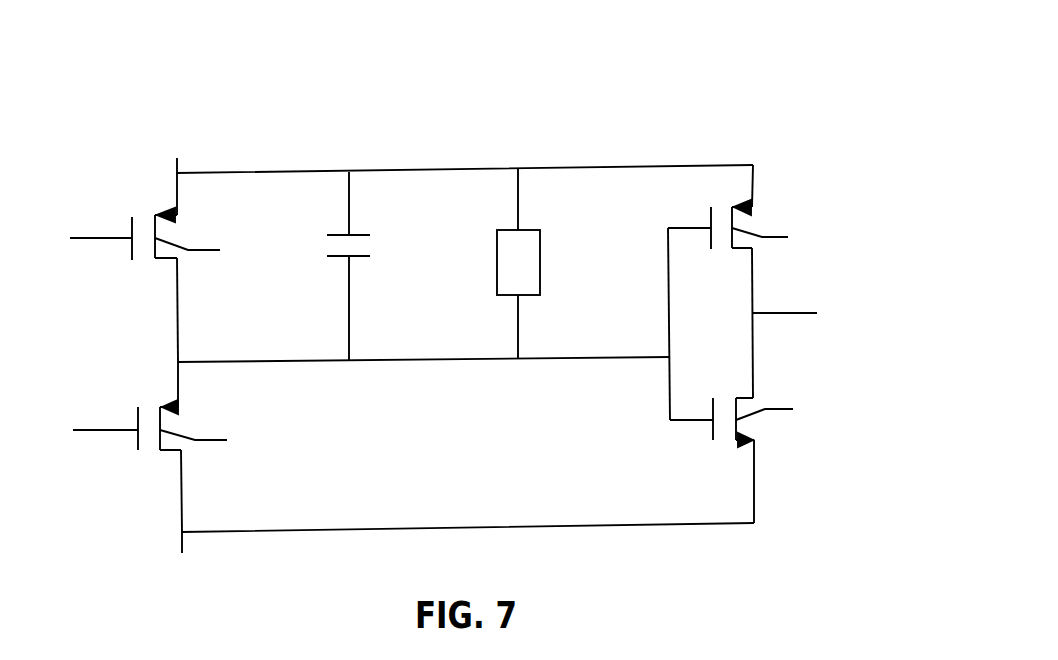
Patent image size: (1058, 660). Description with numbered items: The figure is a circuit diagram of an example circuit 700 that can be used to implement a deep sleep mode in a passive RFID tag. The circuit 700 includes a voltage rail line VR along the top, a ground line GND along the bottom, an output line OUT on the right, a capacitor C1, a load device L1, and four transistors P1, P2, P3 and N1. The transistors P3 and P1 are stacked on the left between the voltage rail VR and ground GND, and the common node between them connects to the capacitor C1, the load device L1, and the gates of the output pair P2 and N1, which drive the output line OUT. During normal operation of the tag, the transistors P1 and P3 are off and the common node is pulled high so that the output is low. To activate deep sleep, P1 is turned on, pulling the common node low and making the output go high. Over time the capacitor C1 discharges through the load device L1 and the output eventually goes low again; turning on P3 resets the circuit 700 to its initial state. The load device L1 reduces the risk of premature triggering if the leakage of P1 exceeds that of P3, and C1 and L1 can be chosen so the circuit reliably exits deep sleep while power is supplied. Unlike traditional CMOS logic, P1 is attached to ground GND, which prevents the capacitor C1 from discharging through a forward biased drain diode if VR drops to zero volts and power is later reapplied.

The circuit 700 is at (795, 88).
The transistor P1 is at (173, 429).
The transistor P2 is at (754, 228).
The transistor P3 is at (171, 239).
The transistor N1 is at (757, 420).
The capacitor C1 is at (358, 232).
The load device L1 is at (530, 230).
The voltage rail line VR is at (455, 140).
The ground line GND is at (456, 558).
The output line OUT is at (820, 313).